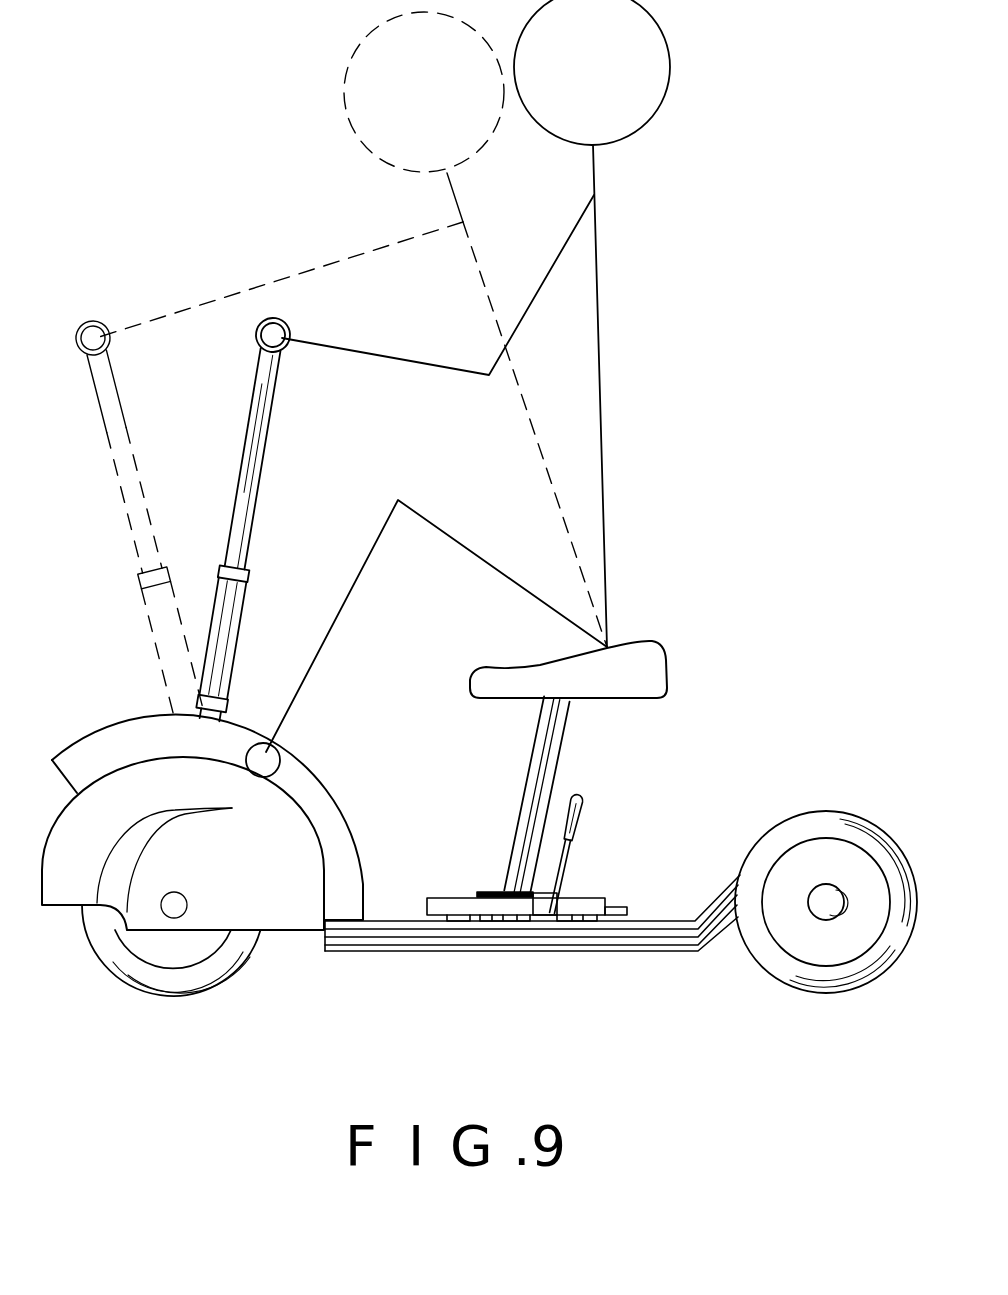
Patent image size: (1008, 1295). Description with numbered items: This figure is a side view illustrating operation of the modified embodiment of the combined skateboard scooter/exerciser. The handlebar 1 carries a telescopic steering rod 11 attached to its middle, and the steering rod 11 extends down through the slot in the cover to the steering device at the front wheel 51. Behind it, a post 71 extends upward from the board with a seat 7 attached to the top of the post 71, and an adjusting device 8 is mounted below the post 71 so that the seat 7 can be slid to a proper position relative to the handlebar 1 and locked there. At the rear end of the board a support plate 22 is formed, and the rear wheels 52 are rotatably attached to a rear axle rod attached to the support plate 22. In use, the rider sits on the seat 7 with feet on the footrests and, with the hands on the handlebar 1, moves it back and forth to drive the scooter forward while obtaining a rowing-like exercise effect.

The handlebar 1 is at (281, 338).
The telescopic steering rod 11 is at (228, 623).
The seat 7 is at (645, 675).
The post 71 is at (552, 738).
The adjusting device 8 is at (468, 921).
The support plate 22 is at (630, 926).
The front wheel 51 is at (242, 963).
The rear wheels 52 is at (785, 967).